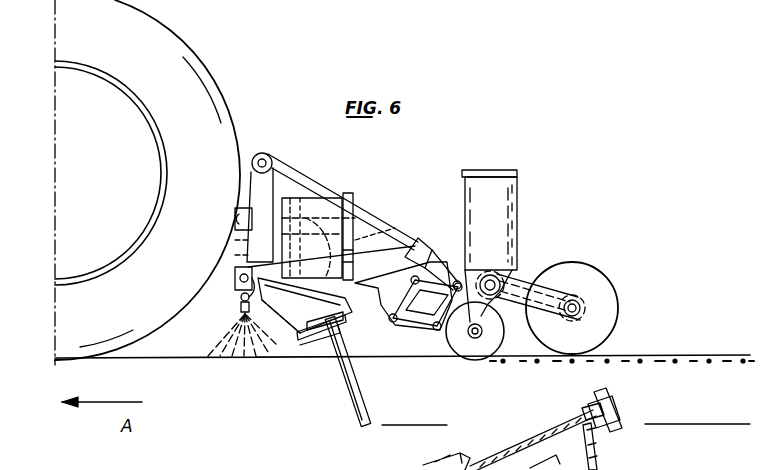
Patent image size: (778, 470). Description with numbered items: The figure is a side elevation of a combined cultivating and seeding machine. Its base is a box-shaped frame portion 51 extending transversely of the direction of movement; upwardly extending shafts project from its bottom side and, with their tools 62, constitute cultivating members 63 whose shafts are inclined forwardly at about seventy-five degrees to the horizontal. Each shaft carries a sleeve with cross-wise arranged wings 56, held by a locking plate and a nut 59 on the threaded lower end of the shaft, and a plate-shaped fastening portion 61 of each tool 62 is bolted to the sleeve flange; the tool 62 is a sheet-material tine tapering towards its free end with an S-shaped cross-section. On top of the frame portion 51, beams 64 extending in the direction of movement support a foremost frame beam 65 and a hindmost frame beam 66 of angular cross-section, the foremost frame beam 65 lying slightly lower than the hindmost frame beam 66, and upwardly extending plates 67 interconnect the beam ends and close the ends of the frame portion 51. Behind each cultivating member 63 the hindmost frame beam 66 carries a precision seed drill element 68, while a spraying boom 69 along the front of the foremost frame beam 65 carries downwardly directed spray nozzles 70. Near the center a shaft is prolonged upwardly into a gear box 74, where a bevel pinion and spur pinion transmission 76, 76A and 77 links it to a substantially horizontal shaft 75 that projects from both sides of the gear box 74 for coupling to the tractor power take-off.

The box-shaped frame portion 51 is at (303, 335).
The wings 56 is at (318, 348).
The nut 59 is at (350, 378).
The plate-shaped fastening portion 61 is at (350, 332).
The tool 62 is at (370, 410).
The cultivating member 63 is at (352, 416).
The beams 64 is at (253, 348).
The foremost frame beam 65 is at (255, 253).
The hindmost frame beam 66 is at (432, 247).
The upwardly extending plates 67 is at (372, 274).
The precision seed drill element 68 is at (513, 232).
The spraying boom 69 is at (240, 297).
The spray nozzles 70 is at (240, 311).
The gear box 74 is at (348, 205).
The horizontal shaft 75 is at (378, 216).
The bevel pinion 76 is at (335, 263).
The bevel pinion 76A is at (322, 200).
The spur pinion transmission 77 is at (396, 243).